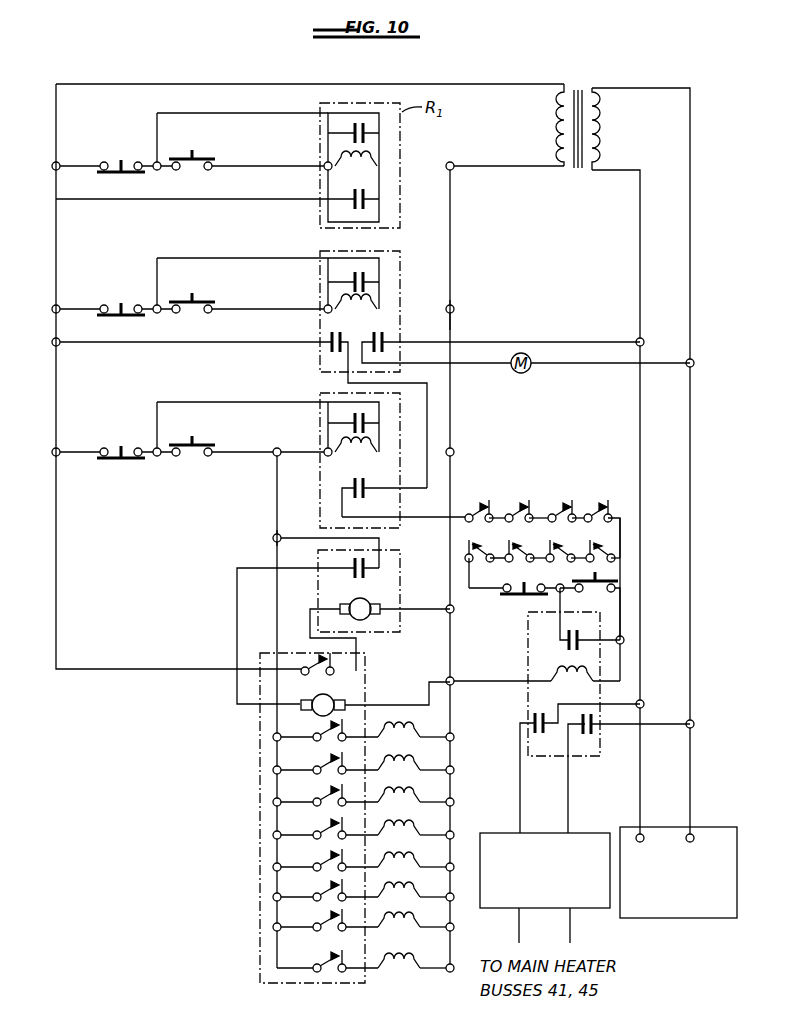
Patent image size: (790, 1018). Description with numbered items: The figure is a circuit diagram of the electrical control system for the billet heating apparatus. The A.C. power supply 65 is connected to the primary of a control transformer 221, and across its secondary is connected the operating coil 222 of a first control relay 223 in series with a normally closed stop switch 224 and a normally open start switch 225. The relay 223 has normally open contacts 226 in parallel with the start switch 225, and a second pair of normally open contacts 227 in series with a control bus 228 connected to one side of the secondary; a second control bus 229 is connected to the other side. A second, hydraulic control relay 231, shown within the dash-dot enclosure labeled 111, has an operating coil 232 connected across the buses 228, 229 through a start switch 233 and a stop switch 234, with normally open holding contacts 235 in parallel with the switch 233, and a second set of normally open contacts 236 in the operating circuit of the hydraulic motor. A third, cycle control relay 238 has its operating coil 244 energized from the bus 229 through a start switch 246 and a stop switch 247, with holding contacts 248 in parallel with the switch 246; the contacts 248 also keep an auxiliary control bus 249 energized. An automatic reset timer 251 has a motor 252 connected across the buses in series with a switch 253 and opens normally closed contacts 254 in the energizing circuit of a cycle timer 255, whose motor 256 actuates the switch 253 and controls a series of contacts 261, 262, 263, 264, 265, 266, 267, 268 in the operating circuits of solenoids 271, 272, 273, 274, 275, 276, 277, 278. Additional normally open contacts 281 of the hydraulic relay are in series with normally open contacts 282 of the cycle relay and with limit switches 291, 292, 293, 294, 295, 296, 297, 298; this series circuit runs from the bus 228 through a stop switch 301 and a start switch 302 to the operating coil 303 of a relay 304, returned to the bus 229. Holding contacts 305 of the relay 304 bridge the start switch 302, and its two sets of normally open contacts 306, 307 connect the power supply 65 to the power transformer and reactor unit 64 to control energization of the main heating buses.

The control transformer 221 is at (588, 88).
The operating coil 222 is at (340, 163).
The first control relay 223 is at (320, 104).
The stop switch 224 is at (120, 150).
The start switch 225 is at (200, 152).
The normally open contacts 226 is at (366, 138).
The normally open contacts 227 is at (366, 195).
The control bus 228 is at (56, 270).
The second control bus 229 is at (452, 256).
The relay 111 is at (400, 276).
The second relay 231 is at (320, 251).
The operating coil 232 is at (378, 308).
The start switch 233 is at (200, 300).
The stop switch 234 is at (108, 300).
The normally open contacts 235 is at (352, 282).
The normally open contacts 236 is at (386, 340).
The third relay 238 is at (320, 393).
The operating coil 244 is at (338, 450).
The start switch 246 is at (200, 445).
The stop switch 247 is at (120, 437).
The normally open contacts 248 is at (352, 423).
The auxiliary control bus 249 is at (275, 545).
The automatic reset timer 251 is at (400, 632).
The motor 252 is at (371, 601).
The switch 253 is at (322, 678).
The normally closed contacts 254 is at (366, 562).
The cycle timer 255 is at (258, 906).
The motor 256 is at (375, 699).
The contacts 261 is at (320, 744).
The contacts 262 is at (320, 777).
The contacts 263 is at (320, 809).
The contacts 264 is at (320, 842).
The contacts 265 is at (320, 874).
The contacts 266 is at (320, 904).
The contacts 267 is at (320, 934).
The contacts 268 is at (318, 968).
The solenoid 271 is at (396, 730).
The solenoid 272 is at (396, 763).
The solenoid 273 is at (396, 795).
The solenoid 274 is at (396, 828).
The solenoid 275 is at (396, 860).
The solenoid 276 is at (396, 890).
The solenoid 277 is at (396, 920).
The solenoid 278 is at (404, 978).
The normally open contacts 281 is at (330, 348).
The normally open contacts 282 is at (366, 484).
The limit switch 291 is at (482, 506).
The limit switch 292 is at (522, 506).
The limit switch 293 is at (584, 476).
The limit switch 294 is at (604, 508).
The limit switch 295 is at (614, 548).
The limit switch 296 is at (564, 546).
The limit switch 297 is at (520, 546).
The limit switch 298 is at (490, 536).
The stop switch 301 is at (524, 576).
The start switch 302 is at (600, 578).
The operating coil 303 is at (590, 678).
The relay 304 is at (530, 660).
The normally open contacts 305 is at (578, 652).
The normally open contacts 306 is at (530, 722).
The normally open contacts 307 is at (594, 730).
The power transformer and reactor unit 64 is at (498, 832).
The A.C. power supply 65 is at (624, 828).